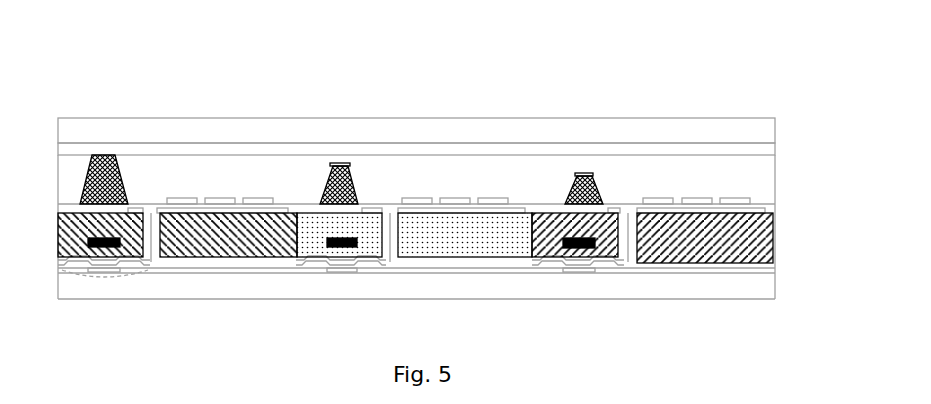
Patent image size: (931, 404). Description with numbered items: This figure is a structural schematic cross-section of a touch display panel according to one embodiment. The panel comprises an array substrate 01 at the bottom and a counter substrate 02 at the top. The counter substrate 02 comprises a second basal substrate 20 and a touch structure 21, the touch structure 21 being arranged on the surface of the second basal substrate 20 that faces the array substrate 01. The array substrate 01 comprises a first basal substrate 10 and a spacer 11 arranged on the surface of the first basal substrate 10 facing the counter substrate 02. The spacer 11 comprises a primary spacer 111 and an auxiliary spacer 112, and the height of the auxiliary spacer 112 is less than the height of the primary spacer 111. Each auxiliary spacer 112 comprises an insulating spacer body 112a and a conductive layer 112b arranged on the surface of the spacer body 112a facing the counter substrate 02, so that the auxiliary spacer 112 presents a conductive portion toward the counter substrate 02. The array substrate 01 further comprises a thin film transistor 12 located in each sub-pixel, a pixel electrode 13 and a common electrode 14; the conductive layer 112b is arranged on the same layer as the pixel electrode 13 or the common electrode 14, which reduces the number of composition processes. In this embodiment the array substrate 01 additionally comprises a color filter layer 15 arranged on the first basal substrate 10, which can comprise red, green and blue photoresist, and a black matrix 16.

The array substrate 01 is at (418, 171).
The counter substrate 02 is at (452, 136).
The first basal substrate 10 is at (758, 285).
The spacer 11 is at (366, 115).
The primary spacer 111 is at (105, 162).
The auxiliary spacer 112 is at (465, 131).
The spacer body 112a is at (348, 167).
The conductive layer 112b is at (405, 84).
The thin film transistor 12 is at (102, 275).
The pixel electrode 13 is at (157, 262).
The common electrode 14 is at (745, 200).
The color filter layer 15 is at (765, 237).
The black matrix 16 is at (345, 247).
The second basal substrate 20 is at (758, 129).
The touch structure 21 is at (758, 148).